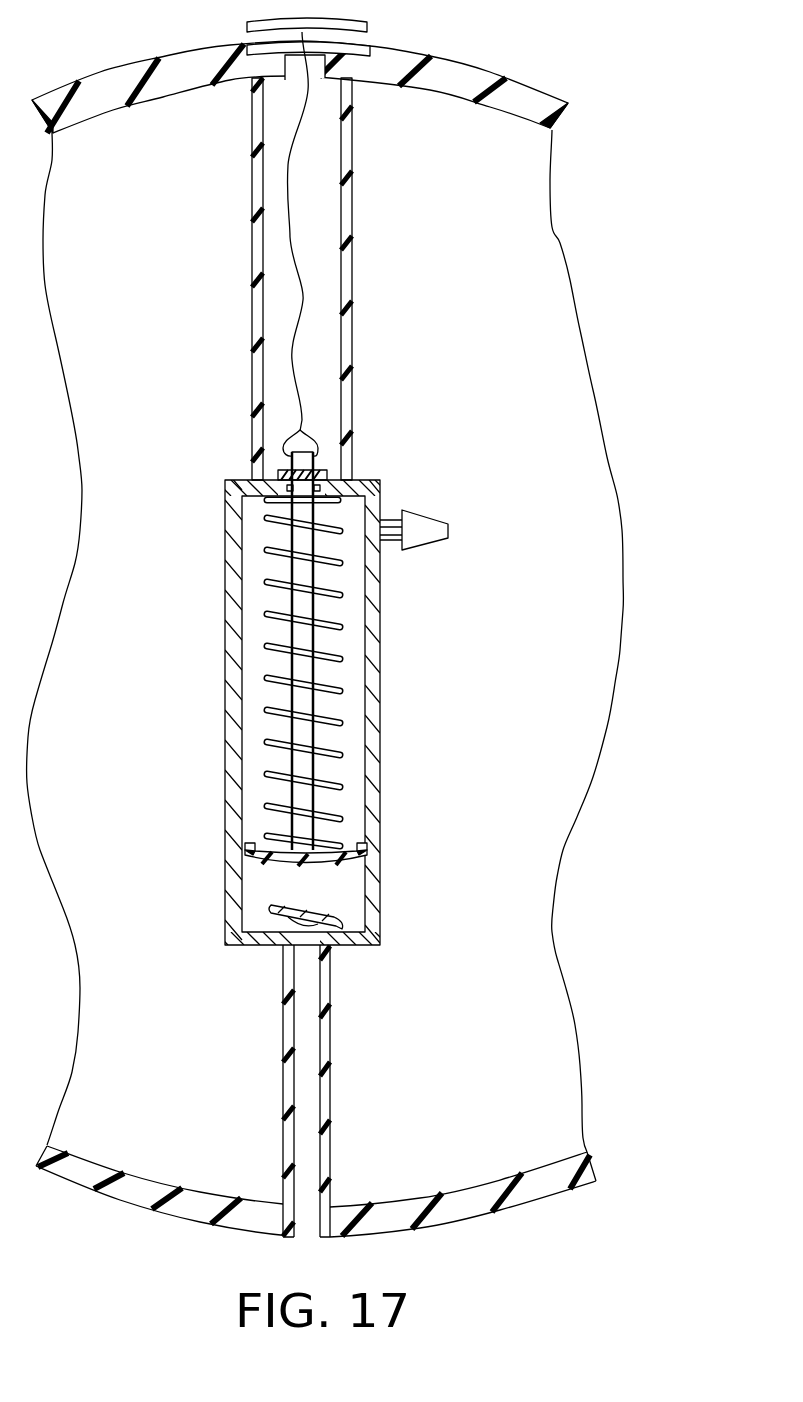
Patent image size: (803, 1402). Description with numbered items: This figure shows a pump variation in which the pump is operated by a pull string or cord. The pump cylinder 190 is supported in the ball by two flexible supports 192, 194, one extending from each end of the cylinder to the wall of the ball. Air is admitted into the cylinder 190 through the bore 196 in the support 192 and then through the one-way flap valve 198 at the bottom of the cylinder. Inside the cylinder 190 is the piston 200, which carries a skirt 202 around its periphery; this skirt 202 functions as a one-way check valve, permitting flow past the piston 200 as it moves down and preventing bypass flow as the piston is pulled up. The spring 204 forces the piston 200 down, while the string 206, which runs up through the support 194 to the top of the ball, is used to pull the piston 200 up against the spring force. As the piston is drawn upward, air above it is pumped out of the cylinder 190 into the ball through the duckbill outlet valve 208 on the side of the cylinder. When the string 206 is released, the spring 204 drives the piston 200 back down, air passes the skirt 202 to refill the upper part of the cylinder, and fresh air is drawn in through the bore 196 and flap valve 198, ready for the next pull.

The pump cylinder 190 is at (380, 717).
The flexible support 192 is at (330, 1060).
The flexible support 194 is at (347, 333).
The bore 196 is at (318, 1118).
The one-way flap valve 198 is at (340, 918).
The piston 200 is at (310, 865).
The skirt 202 is at (353, 843).
The spring 204 is at (328, 623).
The string 206 is at (290, 238).
The duckbill outlet valve 208 is at (424, 510).